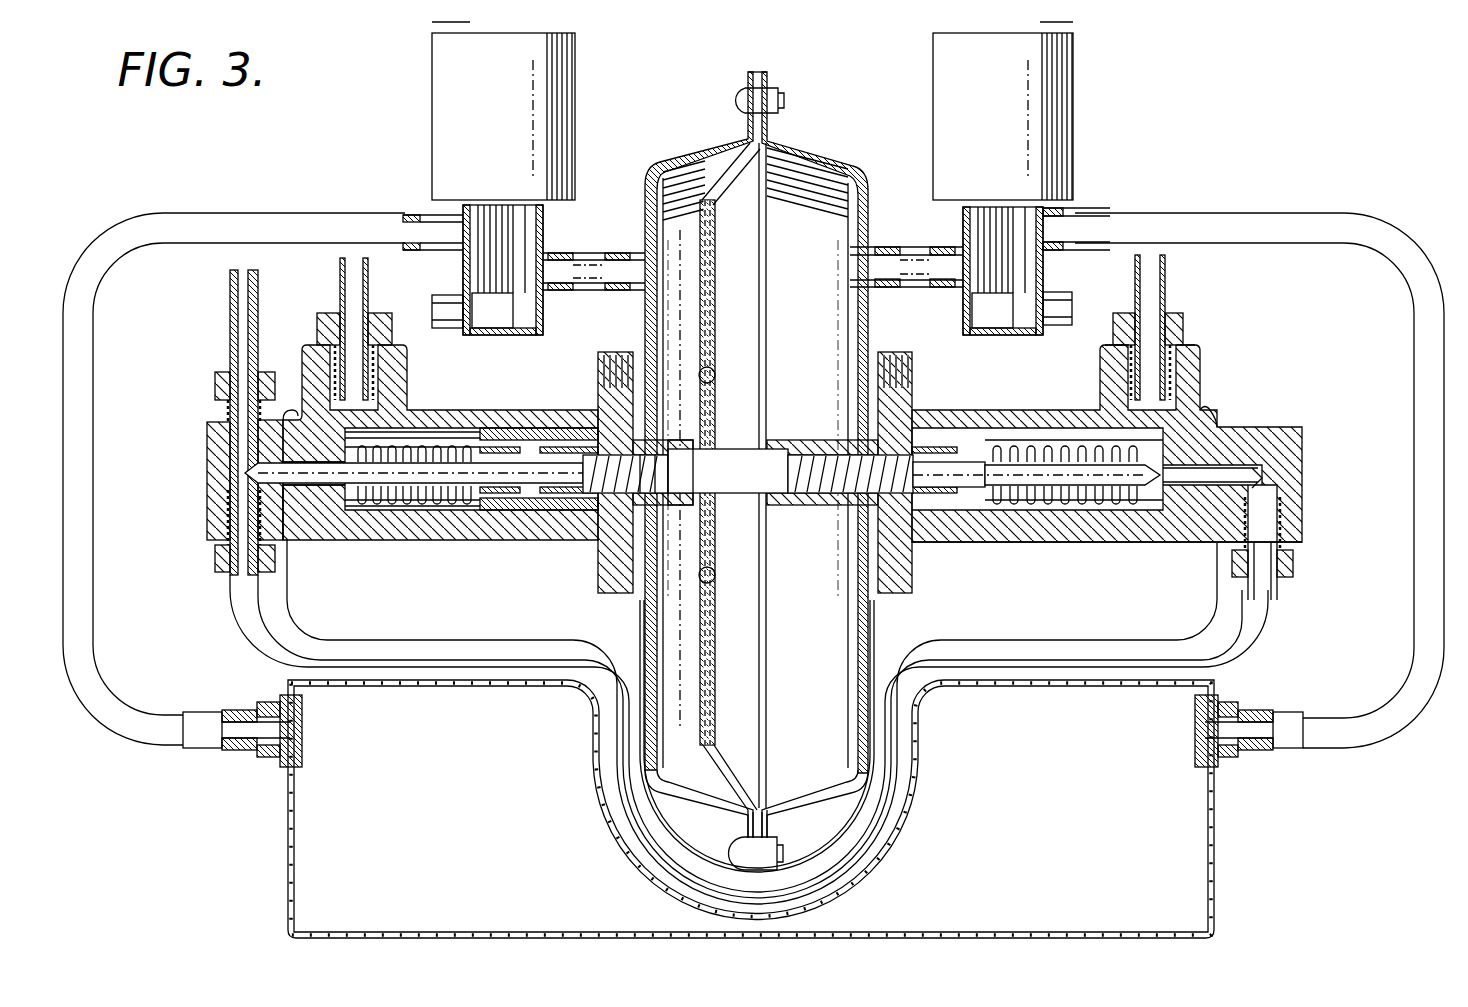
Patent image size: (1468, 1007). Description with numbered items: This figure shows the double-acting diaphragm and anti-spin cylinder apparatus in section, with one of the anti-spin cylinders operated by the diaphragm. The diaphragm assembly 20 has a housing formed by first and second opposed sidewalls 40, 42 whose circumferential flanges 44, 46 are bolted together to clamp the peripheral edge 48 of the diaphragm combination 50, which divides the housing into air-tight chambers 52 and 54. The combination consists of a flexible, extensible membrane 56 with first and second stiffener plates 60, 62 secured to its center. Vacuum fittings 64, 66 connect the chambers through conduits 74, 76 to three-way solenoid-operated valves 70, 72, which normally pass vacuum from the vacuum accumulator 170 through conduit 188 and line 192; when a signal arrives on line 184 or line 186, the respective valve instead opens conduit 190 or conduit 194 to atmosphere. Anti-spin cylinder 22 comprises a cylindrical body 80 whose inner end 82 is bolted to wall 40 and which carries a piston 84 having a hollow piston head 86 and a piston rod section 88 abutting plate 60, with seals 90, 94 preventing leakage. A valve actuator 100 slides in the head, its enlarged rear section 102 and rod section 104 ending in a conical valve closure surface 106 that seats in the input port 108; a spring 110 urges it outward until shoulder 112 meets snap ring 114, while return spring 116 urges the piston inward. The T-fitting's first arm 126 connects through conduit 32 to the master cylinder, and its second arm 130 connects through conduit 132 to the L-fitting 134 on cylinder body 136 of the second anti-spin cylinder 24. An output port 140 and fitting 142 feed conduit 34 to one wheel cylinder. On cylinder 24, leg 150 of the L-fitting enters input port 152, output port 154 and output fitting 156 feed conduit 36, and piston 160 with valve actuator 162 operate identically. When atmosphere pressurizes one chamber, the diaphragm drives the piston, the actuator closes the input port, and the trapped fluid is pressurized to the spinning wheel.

The diaphragm assembly 20 is at (850, 122).
The anti-spin cylinder 22 is at (536, 410).
The second anti-spin cylinder 24 is at (1020, 410).
The conduit 32 is at (230, 290).
The conduit 34 is at (340, 273).
The conduit 36 is at (1168, 280).
The first sidewall 40 is at (645, 200).
The second sidewall 42 is at (868, 200).
The circumferential flange 44 is at (742, 822).
The circumferential flange 46 is at (778, 834).
The peripheral edge 48 is at (760, 822).
The diaphragm combination 50 is at (722, 645).
The first diaphragm pressure chamber 52 is at (667, 311).
The second diaphragm pressure chamber 54 is at (794, 287).
The membrane 56 is at (720, 187).
The first stiffener plate 60 is at (700, 338).
The second stiffener plate 62 is at (716, 338).
The first vacuum fitting 64 is at (630, 262).
The second vacuum fitting 66 is at (882, 262).
The three-way solenoid-operated valve 70 is at (432, 118).
The three-way solenoid-operated valve 72 is at (1075, 104).
The conduit 74 is at (600, 280).
The conduit 76 is at (912, 283).
The cylindrical body 80 is at (460, 410).
The inner end 82 is at (600, 398).
The piston 84 is at (668, 446).
The hollow piston head 86 is at (516, 446).
The piston rod section 88 is at (660, 512).
The seal 90 is at (520, 506).
The seal 94 is at (600, 440).
The valve actuator 100 is at (440, 508).
The enlarged rear section 102 is at (570, 506).
The rod section 104 is at (425, 444).
The conical valve closure surface 106 is at (340, 488).
The input port 108 is at (322, 466).
The spring 110 is at (665, 497).
The valve actuator shoulder 112 is at (515, 470).
The snap ring 114 is at (470, 446).
The return spring 116 is at (380, 508).
The first arm 126 is at (215, 374).
The second arm 130 is at (215, 562).
The conduit 132 is at (500, 640).
The L-fitting 134 is at (1292, 568).
The cylinder body 136 is at (1085, 548).
The output port 140 is at (345, 424).
The fitting 142 is at (322, 320).
The leg 150 is at (1292, 480).
The input port 152 is at (1178, 485).
The output port 154 is at (1150, 430).
The output fitting 156 is at (1183, 333).
The piston 160 is at (825, 442).
The valve actuator 162 is at (1040, 502).
The vacuum accumulator 170 is at (286, 838).
The line 184 is at (403, 22).
The line 186 is at (1053, 34).
The conduit 188 is at (96, 478).
The conduit 190 is at (440, 300).
The line 192 is at (1414, 408).
The conduit 194 is at (1063, 300).